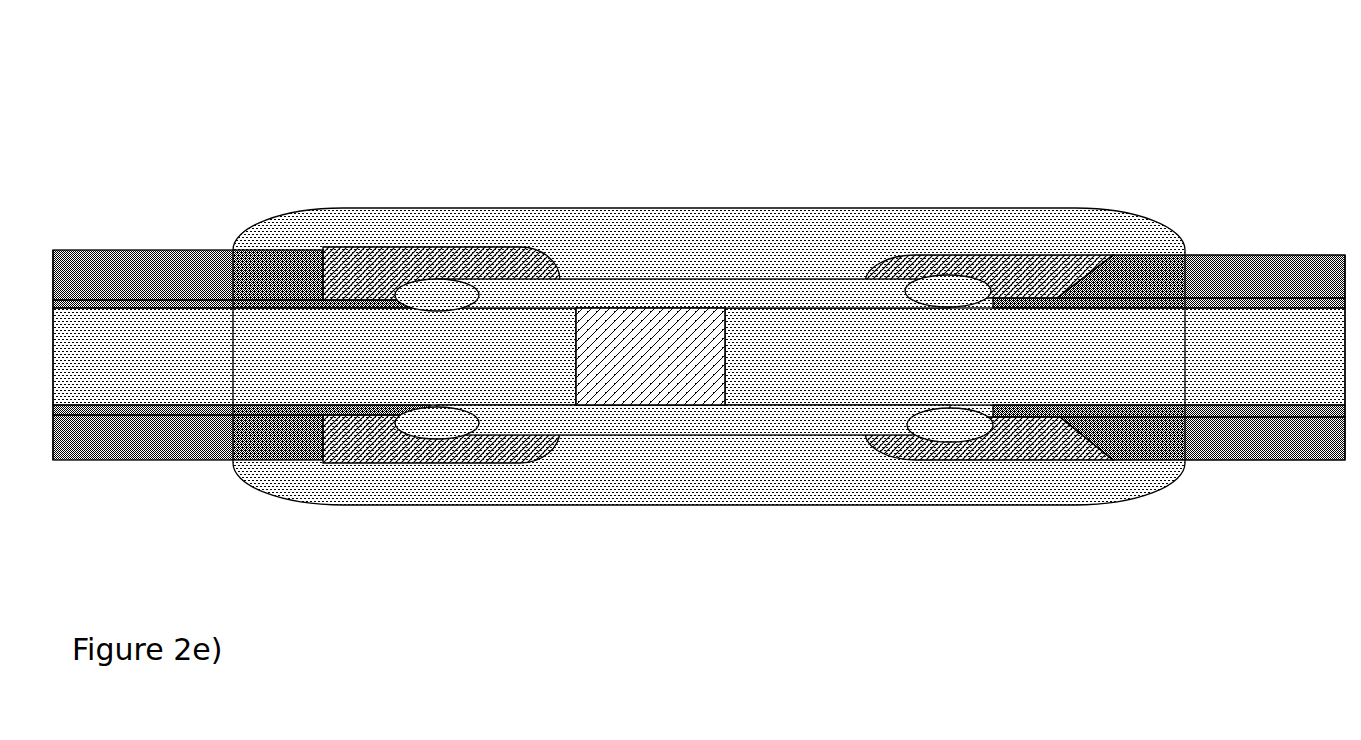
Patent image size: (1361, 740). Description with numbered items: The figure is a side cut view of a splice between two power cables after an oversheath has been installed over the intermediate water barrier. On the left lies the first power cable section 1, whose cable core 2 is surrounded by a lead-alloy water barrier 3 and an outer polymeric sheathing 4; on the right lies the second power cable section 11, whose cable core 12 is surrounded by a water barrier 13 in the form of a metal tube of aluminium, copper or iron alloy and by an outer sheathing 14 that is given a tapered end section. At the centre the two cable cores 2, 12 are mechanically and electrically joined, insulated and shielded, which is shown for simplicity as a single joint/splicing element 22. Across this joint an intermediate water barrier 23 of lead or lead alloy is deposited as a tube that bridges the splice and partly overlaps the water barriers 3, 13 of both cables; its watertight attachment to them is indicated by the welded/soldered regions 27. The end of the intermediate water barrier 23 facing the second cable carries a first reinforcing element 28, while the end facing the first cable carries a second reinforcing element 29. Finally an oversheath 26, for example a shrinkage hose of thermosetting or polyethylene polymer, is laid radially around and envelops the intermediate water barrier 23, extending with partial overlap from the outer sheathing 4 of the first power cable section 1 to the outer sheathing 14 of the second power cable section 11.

The first power cable section 1 is at (258, 195).
The cable core 2 is at (314, 356).
The water barrier 3 is at (314, 361).
The outer polymeric sheathing 4 is at (241, 355).
The second power cable section 11 is at (1168, 213).
The cable core 12 is at (1035, 356).
The water barrier 13 is at (1037, 357).
The outer sheathing 14 is at (1169, 357).
The joint/splicing element 22 is at (650, 356).
The intermediate water barrier 23 is at (693, 357).
The oversheath 26 is at (709, 356).
The welded/soldered regions 27 is at (694, 358).
The first reinforcing element 28 is at (1002, 250).
The second reinforcing element 29 is at (462, 247).